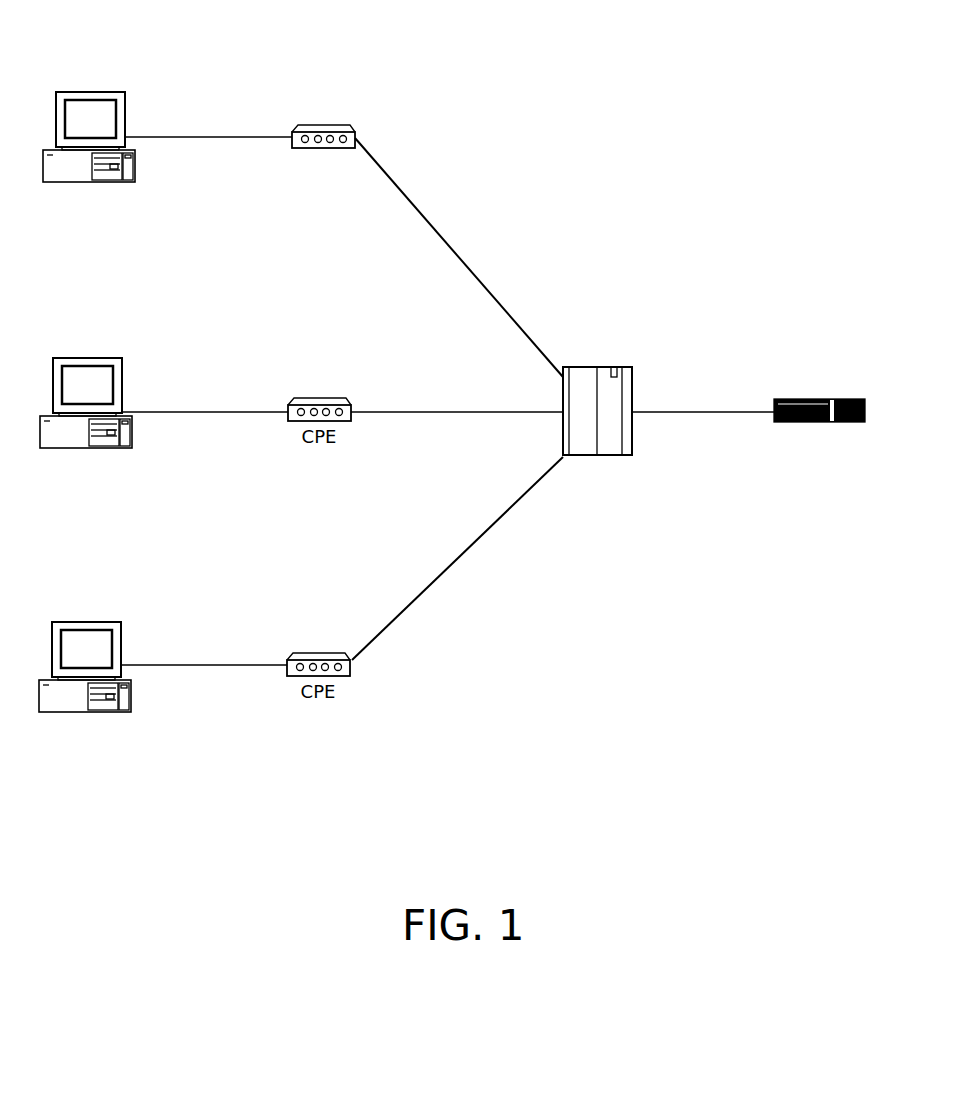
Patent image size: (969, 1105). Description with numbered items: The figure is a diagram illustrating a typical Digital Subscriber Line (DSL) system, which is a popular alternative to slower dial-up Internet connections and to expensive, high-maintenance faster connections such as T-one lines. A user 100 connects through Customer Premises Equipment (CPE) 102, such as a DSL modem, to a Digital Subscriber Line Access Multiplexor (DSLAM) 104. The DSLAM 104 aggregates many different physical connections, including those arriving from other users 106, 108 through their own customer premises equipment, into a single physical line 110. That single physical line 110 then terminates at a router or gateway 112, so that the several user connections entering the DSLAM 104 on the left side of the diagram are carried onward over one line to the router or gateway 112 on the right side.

The user 100 is at (113, 92).
The Customer Premises Equipment (CPE) 102 is at (325, 125).
The Digital Subscriber Line Access Multiplexor (DSLAM) 104 is at (598, 367).
The user 106 is at (110, 358).
The user 108 is at (108, 622).
The single physical line 110 is at (710, 412).
The router or gateway 112 is at (822, 399).